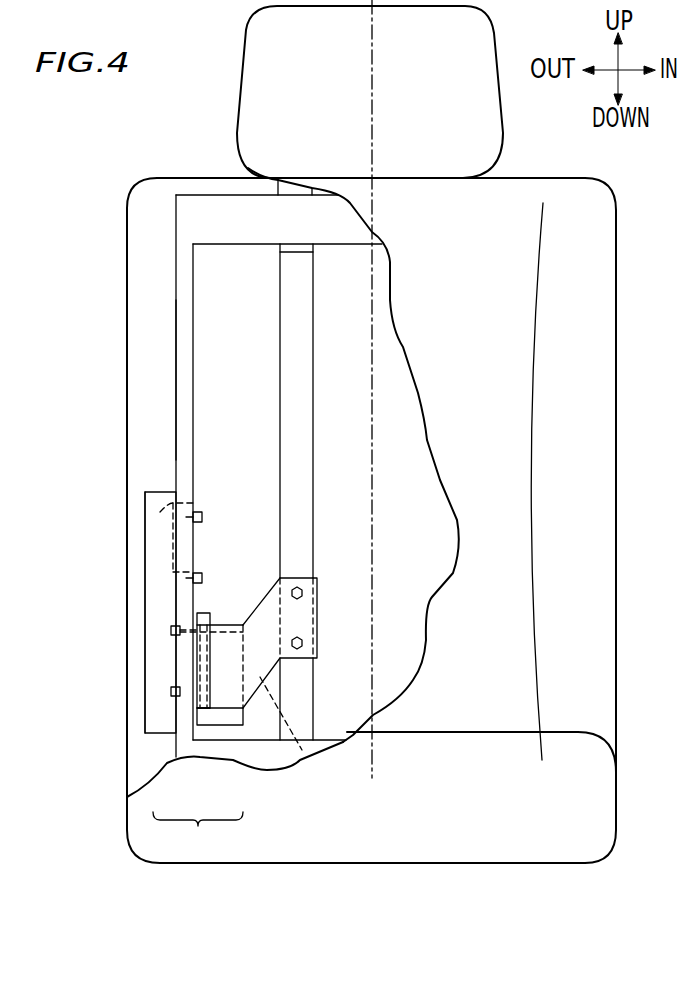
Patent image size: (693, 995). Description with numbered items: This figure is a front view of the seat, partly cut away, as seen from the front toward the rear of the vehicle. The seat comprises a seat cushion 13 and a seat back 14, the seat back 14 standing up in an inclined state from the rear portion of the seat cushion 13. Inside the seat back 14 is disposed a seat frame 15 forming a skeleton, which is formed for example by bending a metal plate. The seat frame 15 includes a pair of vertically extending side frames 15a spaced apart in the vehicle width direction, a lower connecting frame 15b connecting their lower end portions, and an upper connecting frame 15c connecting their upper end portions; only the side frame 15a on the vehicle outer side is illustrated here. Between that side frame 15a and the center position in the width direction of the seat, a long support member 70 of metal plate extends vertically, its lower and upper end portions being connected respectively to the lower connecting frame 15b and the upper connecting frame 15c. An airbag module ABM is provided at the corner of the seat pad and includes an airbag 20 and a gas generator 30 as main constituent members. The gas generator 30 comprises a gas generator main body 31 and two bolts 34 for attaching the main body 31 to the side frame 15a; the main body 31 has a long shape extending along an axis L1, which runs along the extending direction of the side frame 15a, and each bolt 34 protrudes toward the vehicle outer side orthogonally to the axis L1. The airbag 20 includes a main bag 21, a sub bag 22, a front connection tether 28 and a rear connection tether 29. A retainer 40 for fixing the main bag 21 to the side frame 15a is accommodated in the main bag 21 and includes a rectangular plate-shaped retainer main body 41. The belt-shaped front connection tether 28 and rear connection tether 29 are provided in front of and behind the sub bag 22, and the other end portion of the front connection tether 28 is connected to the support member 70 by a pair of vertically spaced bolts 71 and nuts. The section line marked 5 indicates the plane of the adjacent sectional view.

The seat cushion 13 is at (598, 796).
The seat back 14 is at (597, 401).
The seat frame 15 is at (172, 191).
The side frame 15a is at (175, 378).
The lower connecting frame 15b is at (328, 740).
The upper connecting frame 15c is at (343, 247).
The airbag 20 is at (198, 832).
The main bag 21 is at (163, 733).
The sub bag 22 is at (215, 727).
The front connection tether 28 is at (248, 703).
The rear connection tether 29 is at (302, 750).
The gas generator 30 is at (223, 622).
The gas generator main body 31 is at (205, 610).
The bolts 34 is at (171, 629).
The retainer 40 is at (177, 570).
The retainer main body 41 is at (193, 575).
The support member 70 is at (300, 488).
The bolts 71 is at (303, 592).
The airbag module ABM is at (150, 740).
The axis L1 is at (203, 652).
The section line V-V 5 is at (177, 692).